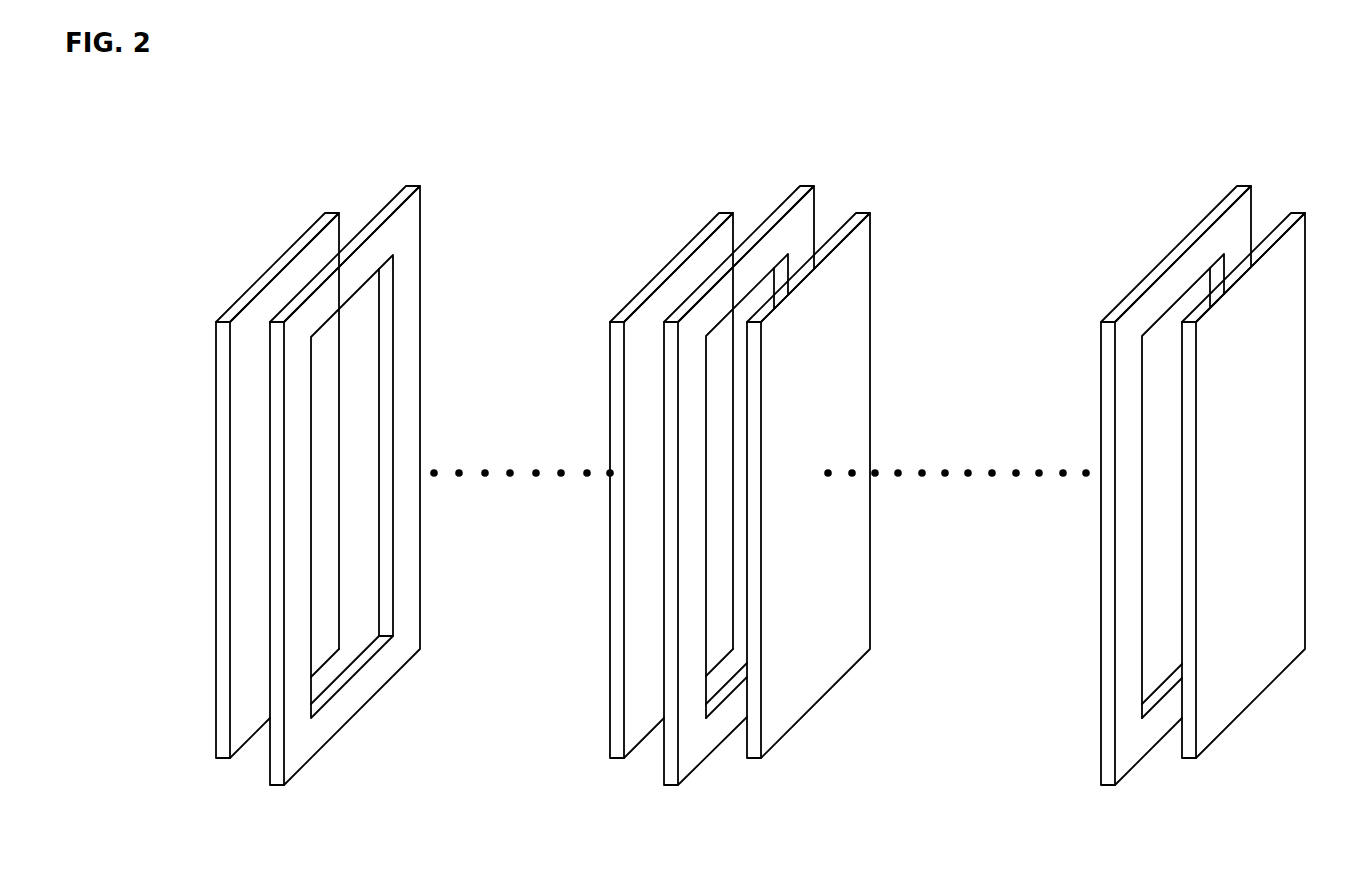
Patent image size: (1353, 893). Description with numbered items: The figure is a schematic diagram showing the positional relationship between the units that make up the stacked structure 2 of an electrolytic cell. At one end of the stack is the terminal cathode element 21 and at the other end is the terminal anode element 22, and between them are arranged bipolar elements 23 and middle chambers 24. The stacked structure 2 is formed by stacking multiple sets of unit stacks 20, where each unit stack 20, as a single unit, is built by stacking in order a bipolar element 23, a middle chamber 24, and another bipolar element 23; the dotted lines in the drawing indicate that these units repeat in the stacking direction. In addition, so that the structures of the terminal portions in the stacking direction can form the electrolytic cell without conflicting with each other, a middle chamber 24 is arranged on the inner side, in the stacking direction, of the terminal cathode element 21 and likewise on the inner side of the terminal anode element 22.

The stacked structure 2 is at (946, 157).
The unit stack 20 is at (750, 112).
The terminal cathode element 21 is at (324, 213).
The terminal anode element 22 is at (1287, 258).
The bipolar element 23 is at (722, 238).
The middle chamber 24 is at (410, 222).